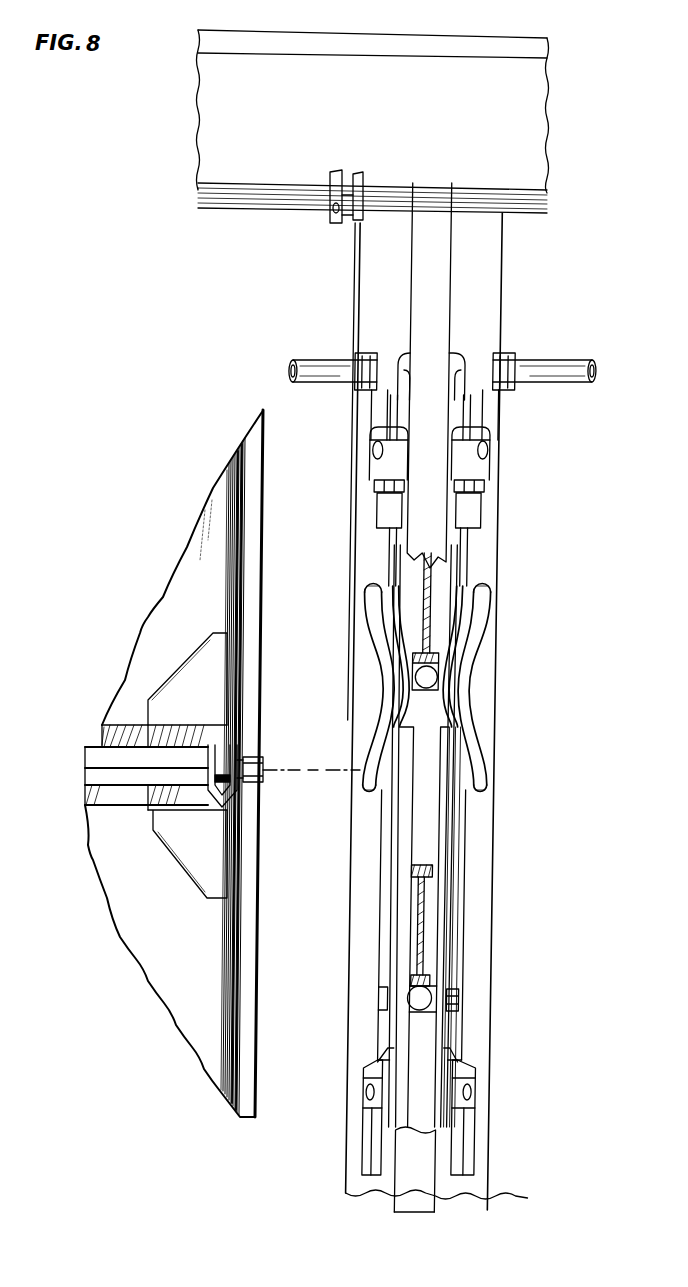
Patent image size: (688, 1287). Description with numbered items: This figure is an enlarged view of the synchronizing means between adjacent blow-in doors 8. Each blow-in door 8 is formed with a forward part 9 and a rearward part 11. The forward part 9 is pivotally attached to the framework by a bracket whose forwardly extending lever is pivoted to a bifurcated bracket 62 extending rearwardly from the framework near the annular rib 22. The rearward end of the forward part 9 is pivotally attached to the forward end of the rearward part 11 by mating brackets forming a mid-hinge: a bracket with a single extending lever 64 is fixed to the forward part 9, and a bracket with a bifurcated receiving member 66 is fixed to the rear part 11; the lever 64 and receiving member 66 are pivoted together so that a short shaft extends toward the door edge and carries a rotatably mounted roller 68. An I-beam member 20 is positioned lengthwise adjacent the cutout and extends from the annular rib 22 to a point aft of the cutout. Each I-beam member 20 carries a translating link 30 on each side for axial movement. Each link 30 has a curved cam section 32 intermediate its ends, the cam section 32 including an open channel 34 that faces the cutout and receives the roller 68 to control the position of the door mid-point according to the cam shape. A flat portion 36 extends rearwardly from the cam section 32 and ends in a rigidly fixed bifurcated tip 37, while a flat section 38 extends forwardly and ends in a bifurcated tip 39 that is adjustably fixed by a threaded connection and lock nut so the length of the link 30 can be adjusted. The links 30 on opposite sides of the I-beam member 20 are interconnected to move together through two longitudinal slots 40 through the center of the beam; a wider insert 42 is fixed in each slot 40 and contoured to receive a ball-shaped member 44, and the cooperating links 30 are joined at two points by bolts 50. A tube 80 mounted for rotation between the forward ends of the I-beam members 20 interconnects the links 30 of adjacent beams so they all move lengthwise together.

The blow-in door 8 is at (262, 712).
The forward part 9 is at (173, 646).
The rearward part 11 is at (189, 958).
The I-beam member 20 is at (445, 291).
The annular rib 22 is at (424, 124).
The translating link 30 is at (389, 833).
The curved cam section 32 is at (410, 660).
The open channel 34 is at (372, 625).
The flat portion 36 is at (391, 957).
The bifurcated tip 37 is at (376, 1078).
The flat section 38 is at (392, 545).
The bifurcated tip 39 is at (374, 462).
The longitudinal slot 40 is at (431, 863).
The insert 42 is at (424, 918).
The ball-shaped member 44 is at (434, 690).
The bolt 50 is at (471, 1000).
The bifurcated bracket 62 is at (333, 210).
The lever 64 is at (220, 698).
The bifurcated receiving member 66 is at (220, 832).
The roller 68 is at (264, 760).
The tube 80 is at (329, 372).